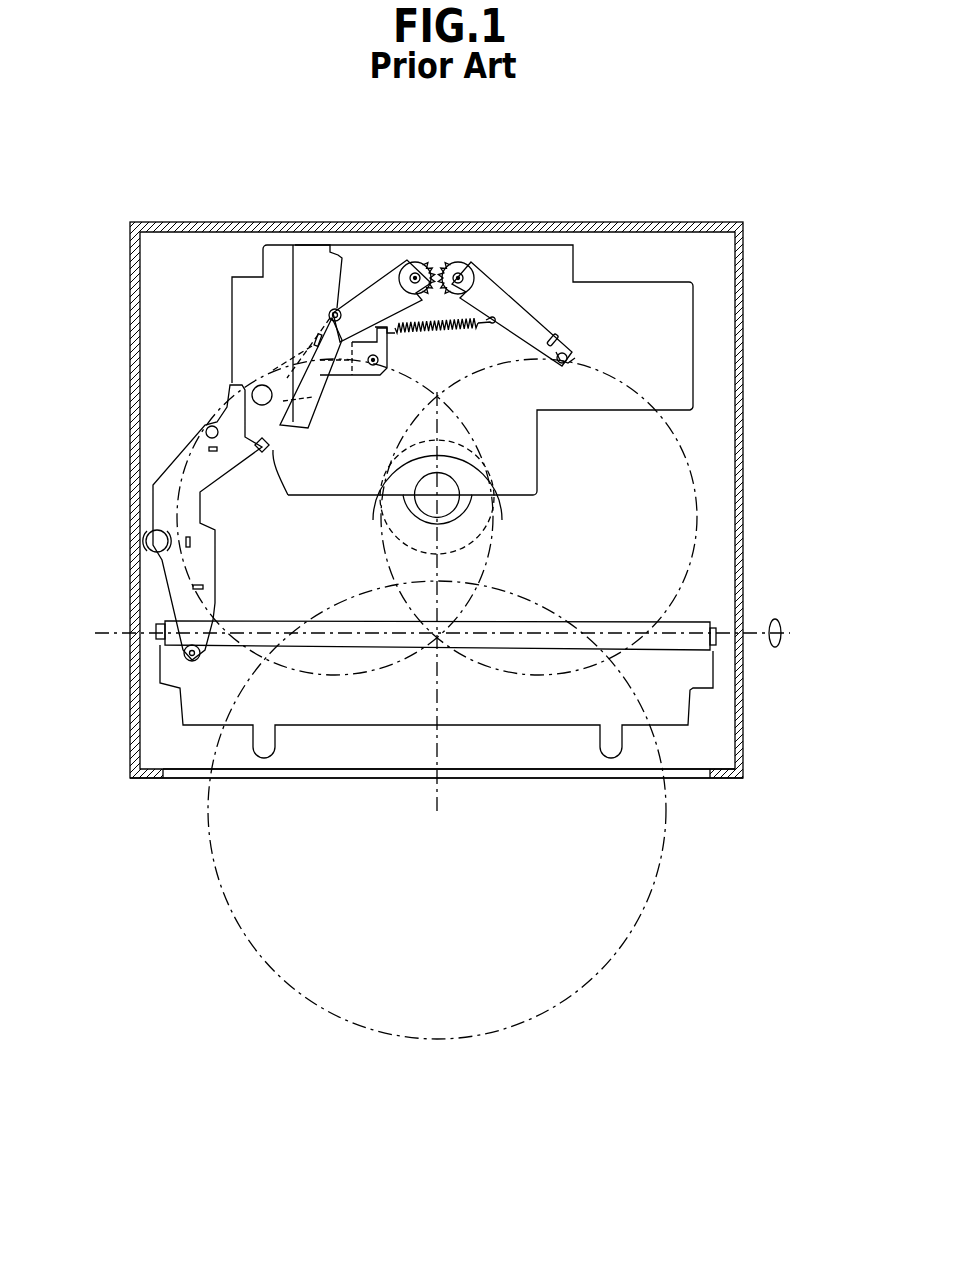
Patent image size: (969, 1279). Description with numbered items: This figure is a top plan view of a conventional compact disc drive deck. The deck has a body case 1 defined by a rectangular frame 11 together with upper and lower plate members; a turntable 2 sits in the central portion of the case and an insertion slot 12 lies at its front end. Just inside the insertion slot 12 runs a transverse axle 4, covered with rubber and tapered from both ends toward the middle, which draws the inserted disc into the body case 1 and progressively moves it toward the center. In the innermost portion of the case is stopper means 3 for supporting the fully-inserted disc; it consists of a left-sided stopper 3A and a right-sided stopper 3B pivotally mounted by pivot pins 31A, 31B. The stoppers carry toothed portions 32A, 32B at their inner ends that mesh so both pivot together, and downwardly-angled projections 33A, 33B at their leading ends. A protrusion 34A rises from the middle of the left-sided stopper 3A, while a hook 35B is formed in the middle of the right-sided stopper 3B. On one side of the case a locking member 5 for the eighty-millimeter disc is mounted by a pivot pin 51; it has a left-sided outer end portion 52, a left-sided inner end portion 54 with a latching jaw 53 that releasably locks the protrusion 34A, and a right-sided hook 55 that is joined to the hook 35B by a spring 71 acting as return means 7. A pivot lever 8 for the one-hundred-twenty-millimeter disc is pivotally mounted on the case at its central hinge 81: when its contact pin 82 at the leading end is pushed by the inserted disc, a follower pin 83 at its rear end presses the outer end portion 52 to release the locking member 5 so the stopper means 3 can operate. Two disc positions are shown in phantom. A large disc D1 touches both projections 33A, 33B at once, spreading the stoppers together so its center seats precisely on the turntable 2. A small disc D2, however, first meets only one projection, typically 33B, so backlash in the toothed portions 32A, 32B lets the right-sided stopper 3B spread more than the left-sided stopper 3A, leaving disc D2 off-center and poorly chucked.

The body case 1 is at (764, 394).
The turntable 2 is at (380, 498).
The stopper means 3 is at (588, 118).
The left-sided stopper 3A is at (362, 292).
The right-sided stopper 3B is at (530, 282).
The transverse axle 4 is at (693, 620).
The locking member 5 is at (293, 303).
The return means 7 is at (553, 362).
The spring 71 is at (562, 358).
The pivot lever 8 is at (155, 485).
The rectangular frame 11 is at (745, 494).
The insertion slot 12 is at (688, 778).
The pivot pin 31A is at (408, 262).
The pivot pin 31B is at (482, 272).
The toothed portion 32A is at (432, 258).
The toothed portion 32B is at (443, 262).
The downwardly-angled projection 33A is at (300, 347).
The downwardly-angled projection 33B is at (568, 333).
The protrusion 34A is at (312, 255).
The hook 35B is at (512, 285).
The pivot pin 51 is at (368, 370).
The left-sided outer end portion 52 is at (293, 418).
The latching jaw 53 is at (333, 312).
The left-sided inner end portion 54 is at (336, 309).
The right-sided hook 55 is at (418, 333).
The lever pivot 81 is at (143, 540).
The contact pin 82 is at (184, 655).
The follower pin 83 is at (252, 395).
The 120 mm disc D1 is at (593, 982).
The 80 mm disc D2 is at (647, 402).